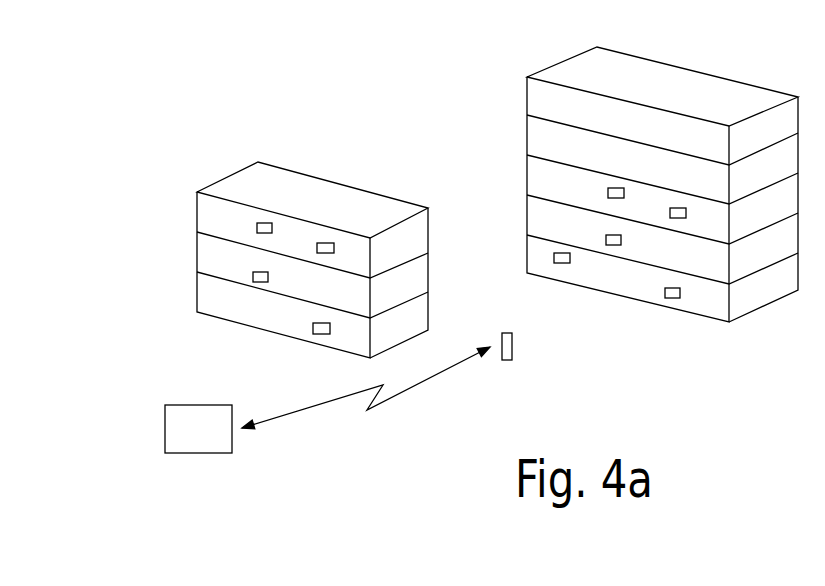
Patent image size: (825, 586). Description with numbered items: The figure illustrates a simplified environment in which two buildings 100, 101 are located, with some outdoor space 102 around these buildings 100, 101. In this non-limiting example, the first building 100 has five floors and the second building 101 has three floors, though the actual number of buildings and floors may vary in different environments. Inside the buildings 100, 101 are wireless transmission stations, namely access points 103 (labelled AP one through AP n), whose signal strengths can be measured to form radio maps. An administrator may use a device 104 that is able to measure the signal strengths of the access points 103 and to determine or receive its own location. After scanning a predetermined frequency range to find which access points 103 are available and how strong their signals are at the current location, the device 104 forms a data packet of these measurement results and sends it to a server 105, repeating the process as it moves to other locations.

The first building 100 is at (743, 80).
The second building 101 is at (292, 170).
The outdoor space 102 is at (498, 261).
The access point 103 is at (252, 275).
The device 104 is at (508, 360).
The server 105 is at (210, 453).